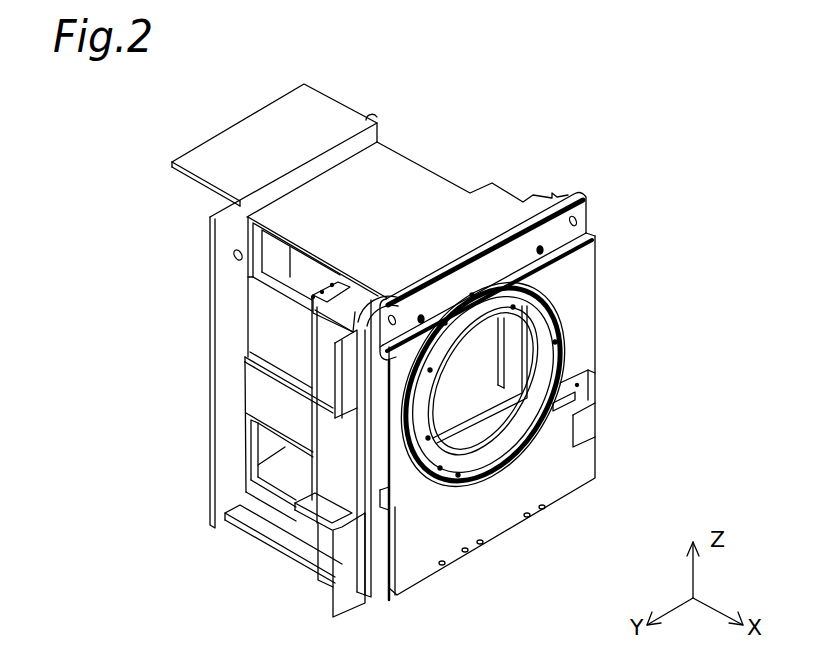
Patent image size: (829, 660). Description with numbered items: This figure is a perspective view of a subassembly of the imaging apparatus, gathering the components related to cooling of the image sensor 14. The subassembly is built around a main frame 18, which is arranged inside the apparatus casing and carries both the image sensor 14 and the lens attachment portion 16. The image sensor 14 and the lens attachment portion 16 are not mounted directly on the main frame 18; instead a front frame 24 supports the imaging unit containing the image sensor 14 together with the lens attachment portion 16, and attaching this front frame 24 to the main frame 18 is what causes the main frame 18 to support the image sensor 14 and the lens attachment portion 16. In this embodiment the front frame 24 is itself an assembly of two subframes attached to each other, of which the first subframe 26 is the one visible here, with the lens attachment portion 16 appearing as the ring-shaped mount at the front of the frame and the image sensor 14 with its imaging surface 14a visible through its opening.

The image sensor 14 is at (571, 374).
The imaging surface 14a is at (492, 362).
The lens attachment portion 16 is at (500, 462).
The main frame 18 is at (432, 200).
The front frame 24 is at (550, 396).
The first subframe 26 is at (587, 280).